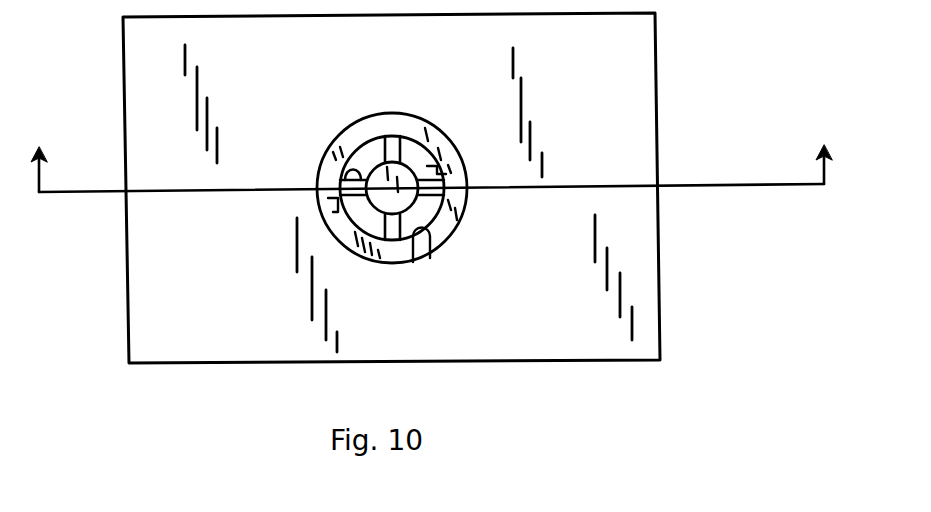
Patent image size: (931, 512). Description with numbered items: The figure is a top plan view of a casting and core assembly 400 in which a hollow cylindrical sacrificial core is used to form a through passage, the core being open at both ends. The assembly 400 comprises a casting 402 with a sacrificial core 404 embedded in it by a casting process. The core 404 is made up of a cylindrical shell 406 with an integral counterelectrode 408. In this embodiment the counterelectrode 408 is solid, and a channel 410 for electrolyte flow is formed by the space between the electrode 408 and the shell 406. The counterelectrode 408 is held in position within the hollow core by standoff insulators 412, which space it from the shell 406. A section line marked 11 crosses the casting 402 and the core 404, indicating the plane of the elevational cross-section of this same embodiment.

The section line 11- 11 is at (424, 153).
The casting and core assembly 400 is at (732, 222).
The casting 402 is at (655, 92).
The sacrificial core 404 is at (400, 110).
The cylindrical shell 406 is at (322, 203).
The counterelectrode 408 is at (353, 228).
The channel 410 is at (445, 172).
The standoff insulators 412 is at (350, 164).